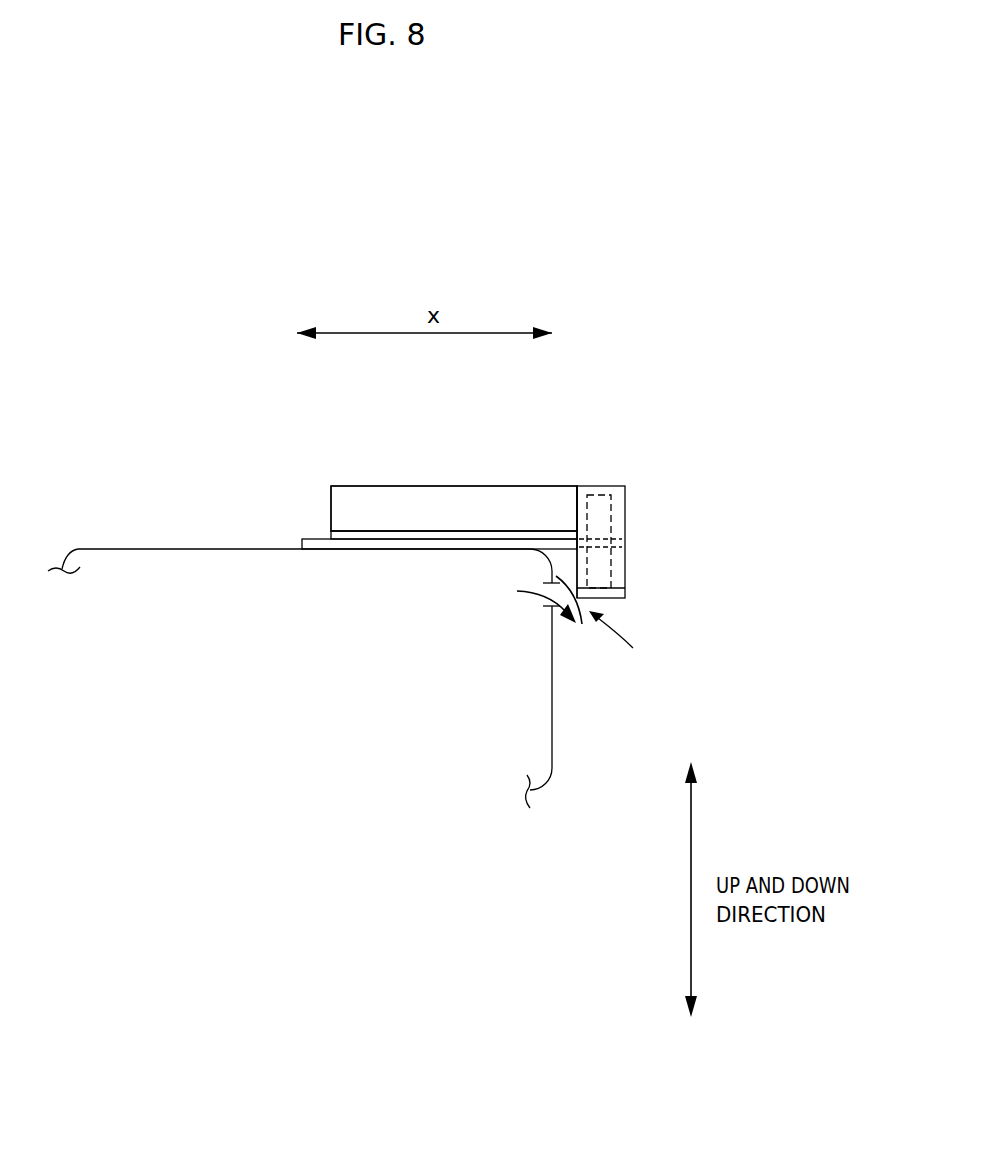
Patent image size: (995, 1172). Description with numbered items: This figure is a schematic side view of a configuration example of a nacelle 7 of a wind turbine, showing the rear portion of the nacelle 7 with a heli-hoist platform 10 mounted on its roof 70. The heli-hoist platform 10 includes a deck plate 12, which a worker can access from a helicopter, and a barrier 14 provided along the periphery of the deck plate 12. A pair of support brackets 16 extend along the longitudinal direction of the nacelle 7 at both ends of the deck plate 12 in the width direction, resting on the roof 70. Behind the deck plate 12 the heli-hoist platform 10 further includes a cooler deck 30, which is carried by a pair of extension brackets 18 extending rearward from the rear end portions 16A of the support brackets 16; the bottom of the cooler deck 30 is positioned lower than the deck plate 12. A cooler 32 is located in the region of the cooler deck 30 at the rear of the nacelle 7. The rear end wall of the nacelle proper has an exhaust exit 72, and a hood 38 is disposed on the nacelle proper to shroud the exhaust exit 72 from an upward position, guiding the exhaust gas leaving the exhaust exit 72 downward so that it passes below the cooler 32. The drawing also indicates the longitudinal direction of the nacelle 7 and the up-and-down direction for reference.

The nacelle 7 is at (207, 466).
The heli-hoist platform 10 is at (504, 453).
The deck plate 12 is at (410, 538).
The barrier 14 is at (360, 486).
The support bracket 16 is at (313, 532).
The rear end portion of support bracket 16A is at (579, 525).
The extension bracket 18 is at (618, 541).
The cooler deck 30 is at (620, 594).
The cooler 32 is at (612, 503).
The hood 38 is at (633, 638).
The roof 70 is at (152, 548).
The exhaust exit 72 is at (546, 607).